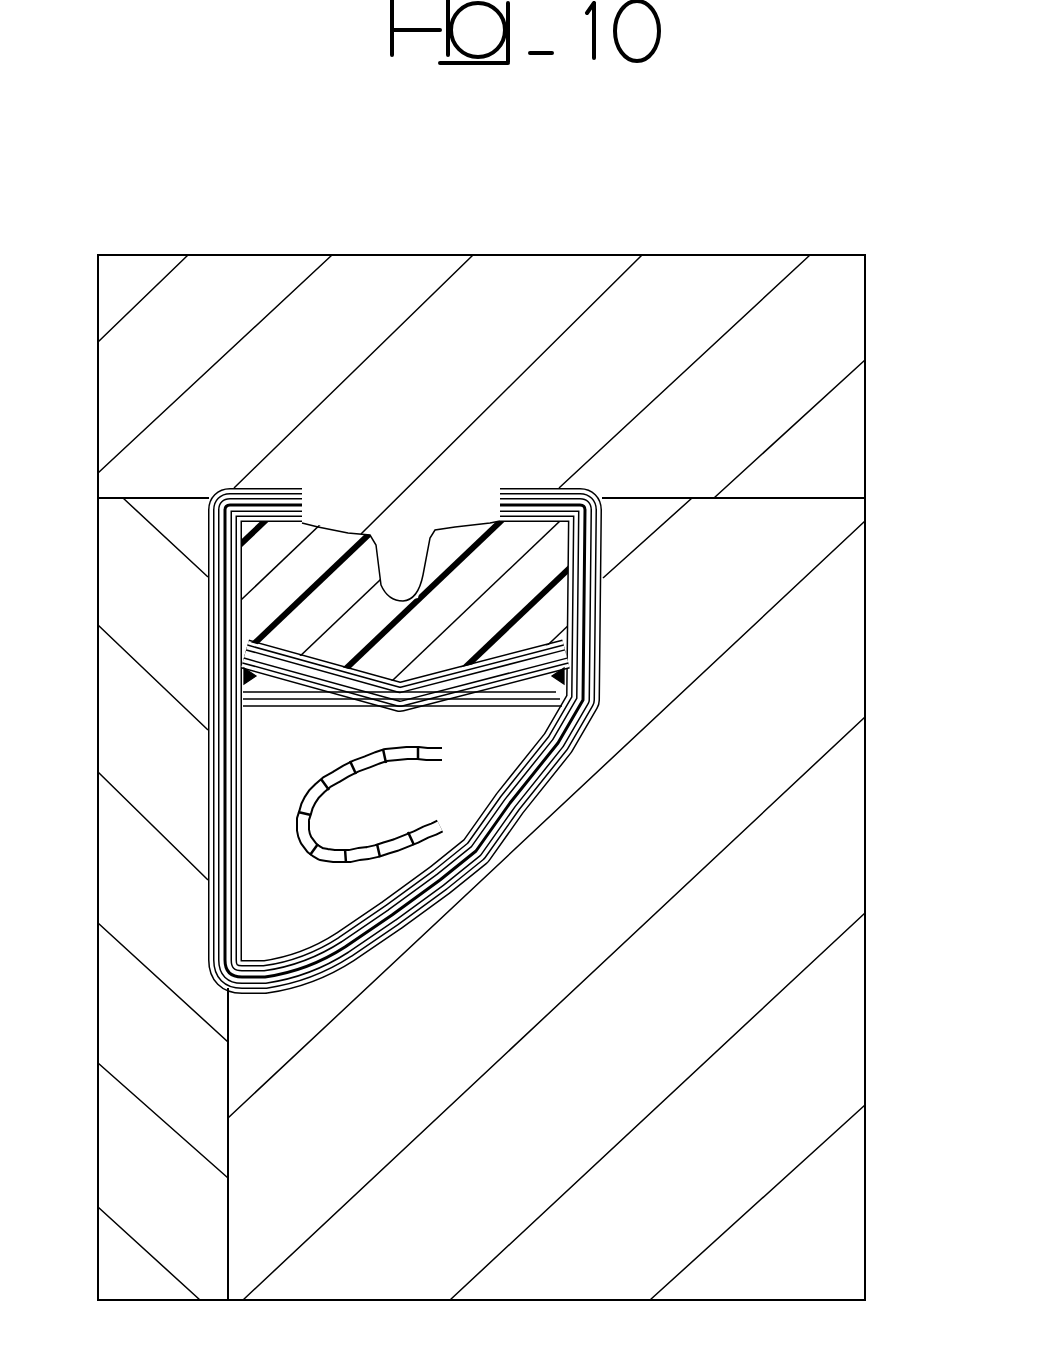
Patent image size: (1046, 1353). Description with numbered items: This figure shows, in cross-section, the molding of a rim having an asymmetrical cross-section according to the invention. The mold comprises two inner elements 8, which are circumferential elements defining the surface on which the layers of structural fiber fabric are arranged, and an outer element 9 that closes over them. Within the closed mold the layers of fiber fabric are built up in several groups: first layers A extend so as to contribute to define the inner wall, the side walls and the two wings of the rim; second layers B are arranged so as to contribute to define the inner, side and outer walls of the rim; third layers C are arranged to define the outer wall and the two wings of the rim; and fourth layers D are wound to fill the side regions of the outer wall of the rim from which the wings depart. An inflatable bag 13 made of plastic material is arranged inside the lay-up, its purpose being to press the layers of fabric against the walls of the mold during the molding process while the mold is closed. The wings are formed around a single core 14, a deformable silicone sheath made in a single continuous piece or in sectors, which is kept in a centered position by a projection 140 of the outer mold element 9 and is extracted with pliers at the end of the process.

The inner elements 8 is at (115, 1010).
The outer element 9 is at (848, 338).
The inflatable bag 13 is at (432, 836).
The core 14 is at (480, 558).
The projection 140 is at (407, 505).
The first layers A is at (603, 556).
The second layers B is at (533, 772).
The third layers C is at (380, 682).
The fourth layers D is at (570, 683).